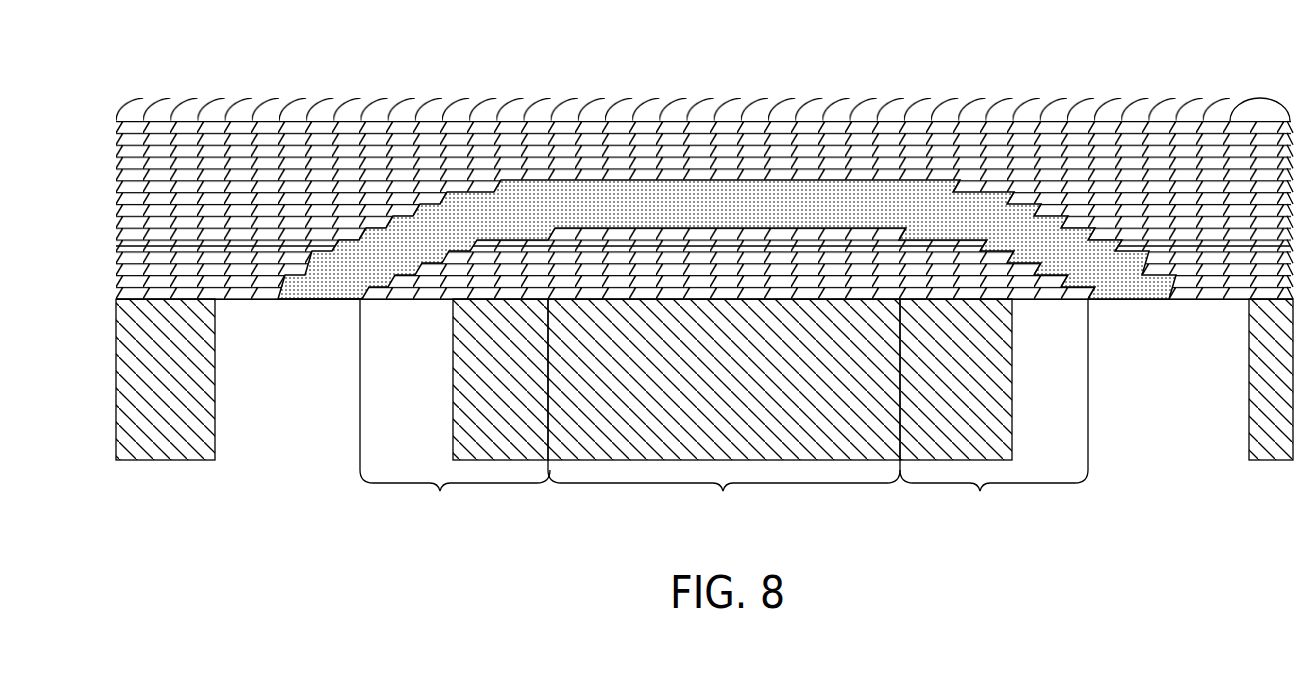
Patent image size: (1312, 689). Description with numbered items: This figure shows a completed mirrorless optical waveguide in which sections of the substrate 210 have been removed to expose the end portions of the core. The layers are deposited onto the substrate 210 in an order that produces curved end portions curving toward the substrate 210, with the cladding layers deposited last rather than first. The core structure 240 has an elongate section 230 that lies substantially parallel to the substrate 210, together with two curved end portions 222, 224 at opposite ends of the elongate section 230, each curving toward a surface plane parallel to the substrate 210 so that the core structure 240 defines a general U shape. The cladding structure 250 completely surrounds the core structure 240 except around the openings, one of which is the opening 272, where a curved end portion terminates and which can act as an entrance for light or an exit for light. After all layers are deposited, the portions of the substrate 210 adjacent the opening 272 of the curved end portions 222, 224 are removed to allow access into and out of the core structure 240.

The substrate 210 is at (115, 397).
The curved end portion 222 is at (455, 408).
The curved end portion 224 is at (994, 408).
The elongate section 230 is at (724, 410).
The core structure 240 is at (757, 208).
The cladding structure 250 is at (920, 132).
The opening 272 is at (320, 300).